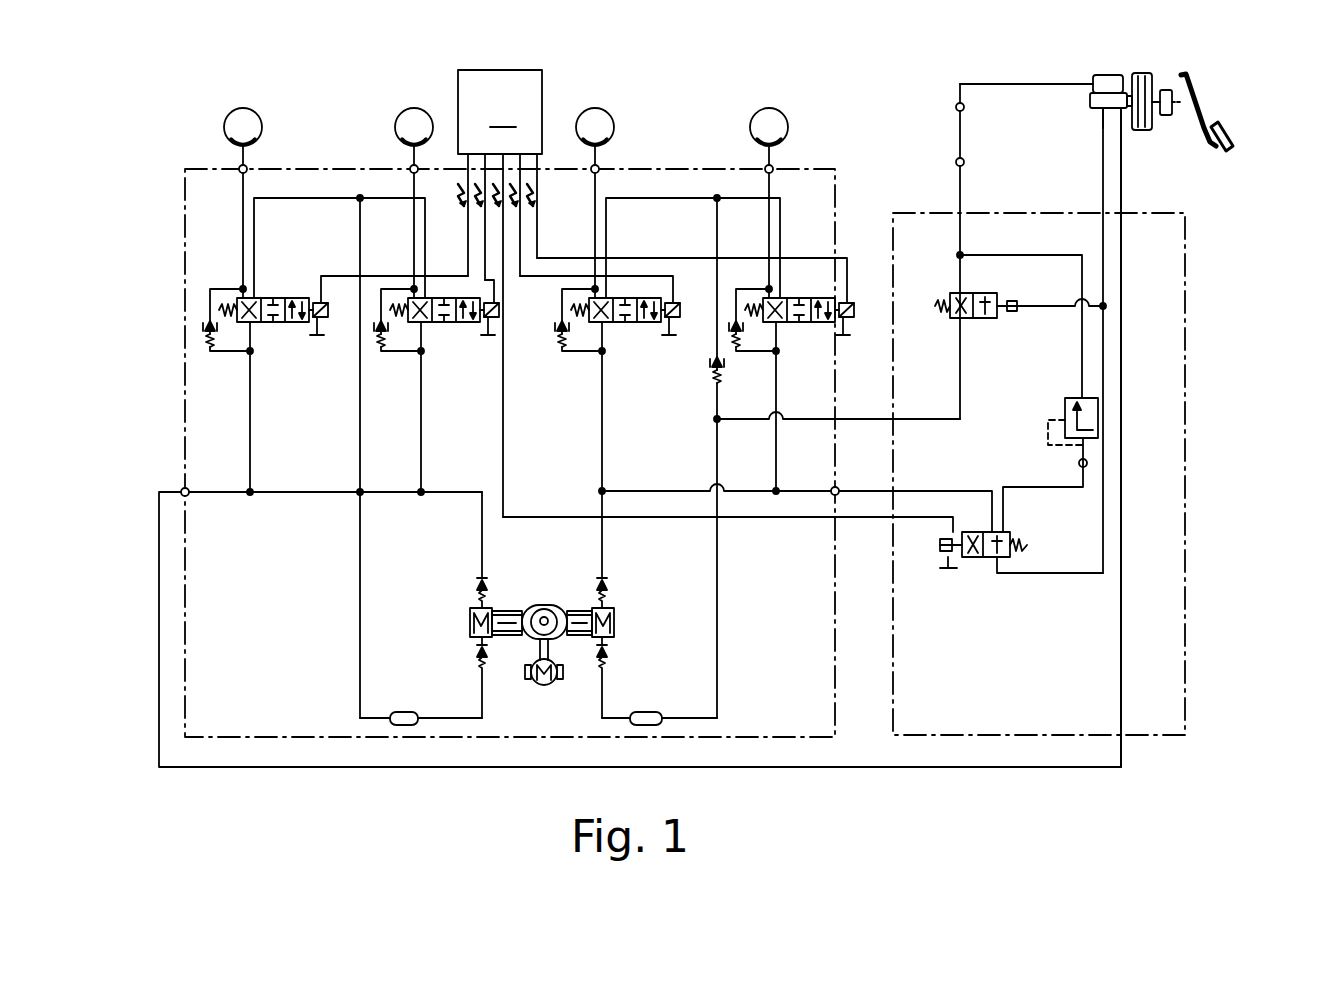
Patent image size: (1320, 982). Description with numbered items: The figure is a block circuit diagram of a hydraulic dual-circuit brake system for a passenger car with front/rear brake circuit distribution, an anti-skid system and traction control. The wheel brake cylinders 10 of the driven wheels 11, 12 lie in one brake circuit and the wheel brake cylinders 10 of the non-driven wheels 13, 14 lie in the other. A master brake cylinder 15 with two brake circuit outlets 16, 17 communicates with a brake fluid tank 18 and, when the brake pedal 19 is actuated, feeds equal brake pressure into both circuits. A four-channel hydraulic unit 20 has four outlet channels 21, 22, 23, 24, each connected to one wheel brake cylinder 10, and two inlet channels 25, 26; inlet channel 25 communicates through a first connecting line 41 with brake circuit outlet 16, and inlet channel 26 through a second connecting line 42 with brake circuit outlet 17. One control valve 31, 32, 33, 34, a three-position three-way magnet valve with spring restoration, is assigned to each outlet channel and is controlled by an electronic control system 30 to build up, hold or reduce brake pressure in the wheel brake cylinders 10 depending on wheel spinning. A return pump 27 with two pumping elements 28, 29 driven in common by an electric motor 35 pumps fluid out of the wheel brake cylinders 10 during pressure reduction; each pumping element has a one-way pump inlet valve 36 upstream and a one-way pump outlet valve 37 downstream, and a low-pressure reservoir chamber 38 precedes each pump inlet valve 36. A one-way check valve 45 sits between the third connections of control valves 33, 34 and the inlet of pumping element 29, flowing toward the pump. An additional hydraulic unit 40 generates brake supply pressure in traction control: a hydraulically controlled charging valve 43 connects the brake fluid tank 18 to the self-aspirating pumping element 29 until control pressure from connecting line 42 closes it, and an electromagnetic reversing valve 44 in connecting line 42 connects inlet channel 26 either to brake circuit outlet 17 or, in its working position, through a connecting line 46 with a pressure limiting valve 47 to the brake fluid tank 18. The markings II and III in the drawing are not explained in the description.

The wheel brake cylinder 10 is at (236, 142).
The driven wheel 11 is at (596, 118).
The driven wheel 12 is at (770, 118).
The non-driven wheel 13 is at (243, 118).
The non-driven wheel 14 is at (414, 118).
The master brake cylinder 15 is at (1090, 100).
The brake circuit outlet 16 is at (1123, 112).
The brake circuit outlet 17 is at (1100, 114).
The brake fluid tank 18 is at (1100, 74).
The brake pedal 19 is at (1206, 106).
The four-channel hydraulic unit 20 is at (840, 190).
The outlet channel 21 is at (246, 166).
The outlet channel 22 is at (417, 166).
The outlet channel 23 is at (598, 166).
The outlet channel 24 is at (772, 166).
The inlet channel 25 is at (183, 490).
The inlet channel 26 is at (838, 487).
The return pump 27 is at (544, 604).
The pumping element 28 is at (468, 612).
The pumping element 29 is at (616, 620).
The electronic control system 30 is at (637, 301).
The control valve 31 is at (273, 323).
The control valve 32 is at (440, 323).
The control valve 33 is at (625, 322).
The control valve 34 is at (800, 322).
The electric motor 35 is at (546, 686).
The pump inlet valve 36 is at (478, 658).
The pump outlet valve 37 is at (486, 585).
The low-pressure reservoir chamber 38 is at (402, 712).
The additional hydraulic unit 40 is at (1187, 375).
The first connecting line 41 is at (1124, 280).
The second connecting line 42 is at (1107, 255).
The charging valve 43 is at (985, 320).
The reversing valve 44 is at (983, 559).
The one-way check valve 45 is at (710, 378).
The connecting line 46 is at (1053, 490).
The pressure limiting valve 47 is at (1064, 412).
The pressure chamber II is at (1079, 465).
The brake circuit III is at (956, 107).